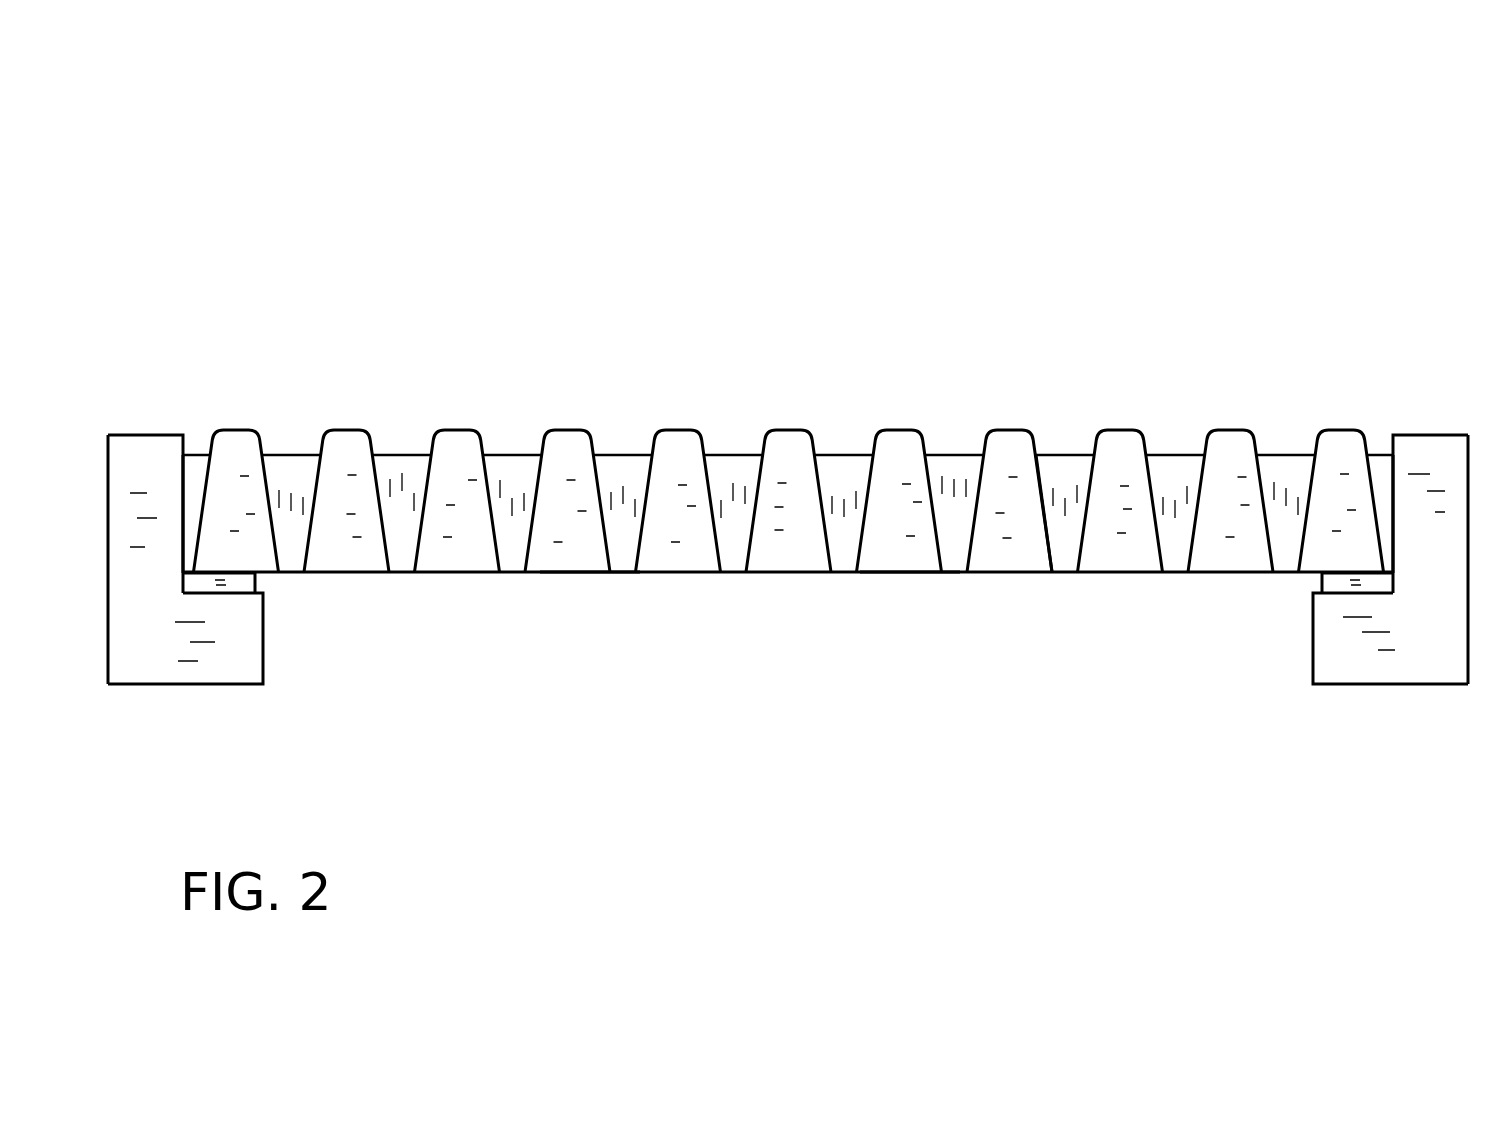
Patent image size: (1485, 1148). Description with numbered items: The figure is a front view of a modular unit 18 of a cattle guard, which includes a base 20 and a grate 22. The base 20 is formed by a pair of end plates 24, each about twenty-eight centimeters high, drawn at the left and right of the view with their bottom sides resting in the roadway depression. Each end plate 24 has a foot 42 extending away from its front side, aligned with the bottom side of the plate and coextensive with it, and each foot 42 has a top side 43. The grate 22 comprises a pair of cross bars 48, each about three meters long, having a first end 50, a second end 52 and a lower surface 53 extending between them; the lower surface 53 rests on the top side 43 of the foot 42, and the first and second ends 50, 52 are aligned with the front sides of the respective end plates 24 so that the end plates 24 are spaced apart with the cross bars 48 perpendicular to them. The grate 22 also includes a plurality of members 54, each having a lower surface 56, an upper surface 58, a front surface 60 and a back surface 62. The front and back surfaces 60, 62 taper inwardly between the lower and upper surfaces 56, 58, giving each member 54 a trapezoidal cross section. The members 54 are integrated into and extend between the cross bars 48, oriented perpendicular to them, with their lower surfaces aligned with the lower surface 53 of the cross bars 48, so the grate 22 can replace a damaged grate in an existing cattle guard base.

The modular unit 18 is at (736, 245).
The base 20 is at (161, 727).
The grate 22 is at (1055, 368).
The end plate 24 is at (105, 437).
The foot 42 is at (267, 640).
The top side of foot 43 is at (205, 592).
The cross bar 48 is at (1165, 452).
The first end 50 is at (183, 458).
The second end 52 is at (1390, 528).
The lower surface of cross bar 53 is at (948, 573).
The member 54 is at (772, 433).
The lower surface of member 56 is at (575, 573).
The upper surface of member 58 is at (893, 430).
The front surface of member 60 is at (980, 463).
The back surface of member 62 is at (1037, 475).